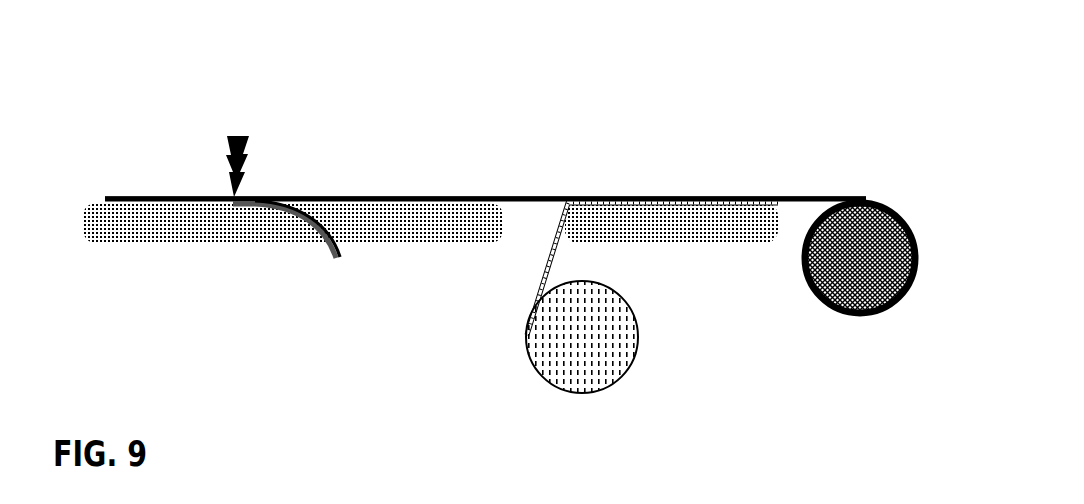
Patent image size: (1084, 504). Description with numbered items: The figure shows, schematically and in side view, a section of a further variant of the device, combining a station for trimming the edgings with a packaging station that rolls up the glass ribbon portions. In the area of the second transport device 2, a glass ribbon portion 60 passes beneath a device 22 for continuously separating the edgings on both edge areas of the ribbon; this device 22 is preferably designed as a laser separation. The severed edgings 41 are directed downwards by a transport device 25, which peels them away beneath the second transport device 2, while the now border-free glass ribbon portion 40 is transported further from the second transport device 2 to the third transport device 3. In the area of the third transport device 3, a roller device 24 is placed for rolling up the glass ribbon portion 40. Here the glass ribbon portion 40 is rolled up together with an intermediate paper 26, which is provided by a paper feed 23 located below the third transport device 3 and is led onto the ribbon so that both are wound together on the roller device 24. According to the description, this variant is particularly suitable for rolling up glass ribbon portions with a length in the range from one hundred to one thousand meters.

The second transport device 2 is at (370, 245).
The third transport device 3 is at (680, 240).
The device for continuously separating the edgings 22 is at (238, 132).
The paper feed 23 is at (550, 340).
The roller device 24 is at (868, 318).
The transport device 25 is at (322, 256).
The intermediate paper 26 is at (552, 242).
The border-free glass ribbon portion 40 is at (450, 197).
The severed edgings 41 is at (339, 258).
The glass ribbon portion 60 is at (130, 196).